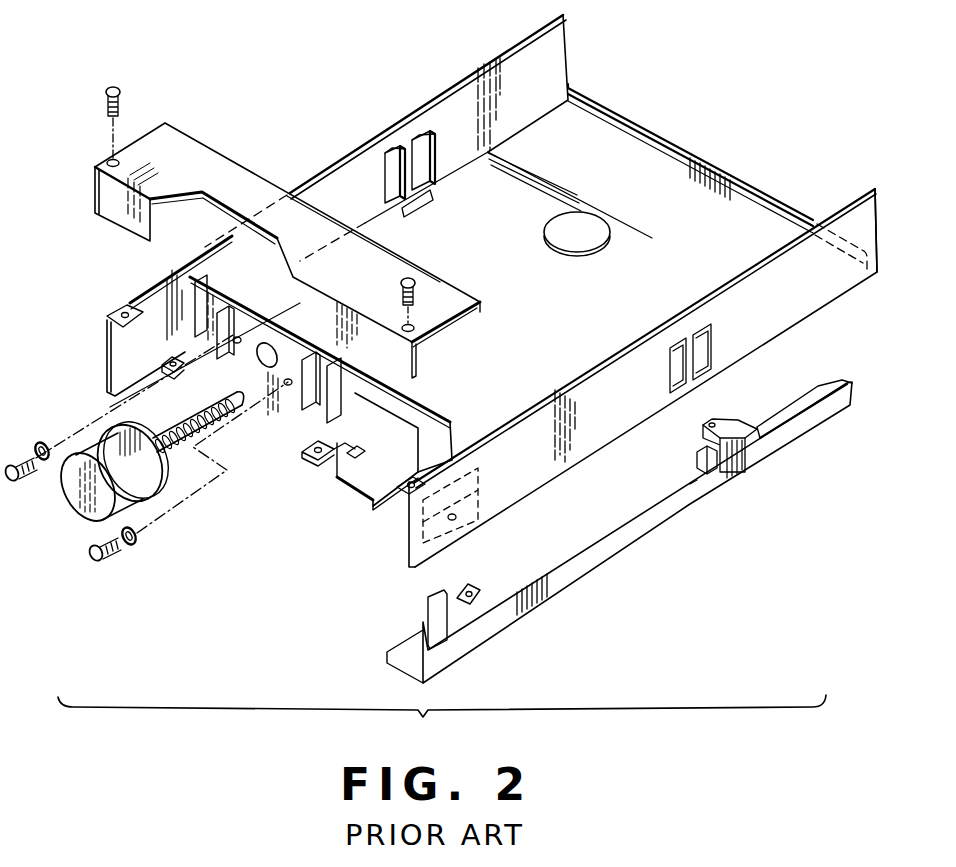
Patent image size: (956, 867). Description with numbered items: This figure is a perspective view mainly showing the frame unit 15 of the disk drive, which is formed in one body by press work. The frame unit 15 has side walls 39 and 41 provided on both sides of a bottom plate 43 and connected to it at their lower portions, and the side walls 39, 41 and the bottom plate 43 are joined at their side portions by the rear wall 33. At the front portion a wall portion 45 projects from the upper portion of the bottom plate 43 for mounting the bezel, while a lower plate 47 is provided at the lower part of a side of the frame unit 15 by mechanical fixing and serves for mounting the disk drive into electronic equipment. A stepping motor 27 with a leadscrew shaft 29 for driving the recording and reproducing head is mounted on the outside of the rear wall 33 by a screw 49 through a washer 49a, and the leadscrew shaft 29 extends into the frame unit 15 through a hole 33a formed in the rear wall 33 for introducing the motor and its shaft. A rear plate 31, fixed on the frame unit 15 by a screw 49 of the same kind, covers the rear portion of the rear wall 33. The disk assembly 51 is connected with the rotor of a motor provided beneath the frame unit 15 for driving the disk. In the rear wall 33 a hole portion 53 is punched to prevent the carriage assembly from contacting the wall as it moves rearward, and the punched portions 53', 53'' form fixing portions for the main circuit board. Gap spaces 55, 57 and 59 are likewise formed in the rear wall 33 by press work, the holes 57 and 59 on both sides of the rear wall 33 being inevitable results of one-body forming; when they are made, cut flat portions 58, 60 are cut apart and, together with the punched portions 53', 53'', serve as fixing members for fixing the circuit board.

The frame unit 15 is at (384, 110).
The stepping motor 27 is at (80, 513).
The leadscrew shaft 29 is at (161, 434).
The rear plate 31 is at (221, 166).
The rear wall 33 is at (440, 408).
The hole 33a is at (261, 344).
The side wall 39 is at (565, 45).
The side wall 41 is at (835, 290).
The bottom plate 43 is at (594, 148).
The wall portion 45 is at (778, 203).
The lower plate 47 is at (675, 507).
The screw 49 is at (116, 90).
The washer 49a is at (44, 442).
The disk assembly 51 is at (593, 226).
The hole portion 53 is at (291, 447).
The punched portion 53' is at (359, 514).
The punched portion 53'' is at (295, 477).
The gap space 55 is at (215, 305).
The hole 57 is at (168, 270).
The cut flat portion 58 is at (162, 359).
The hole 59 is at (470, 444).
The cut flat portion 60 is at (408, 528).